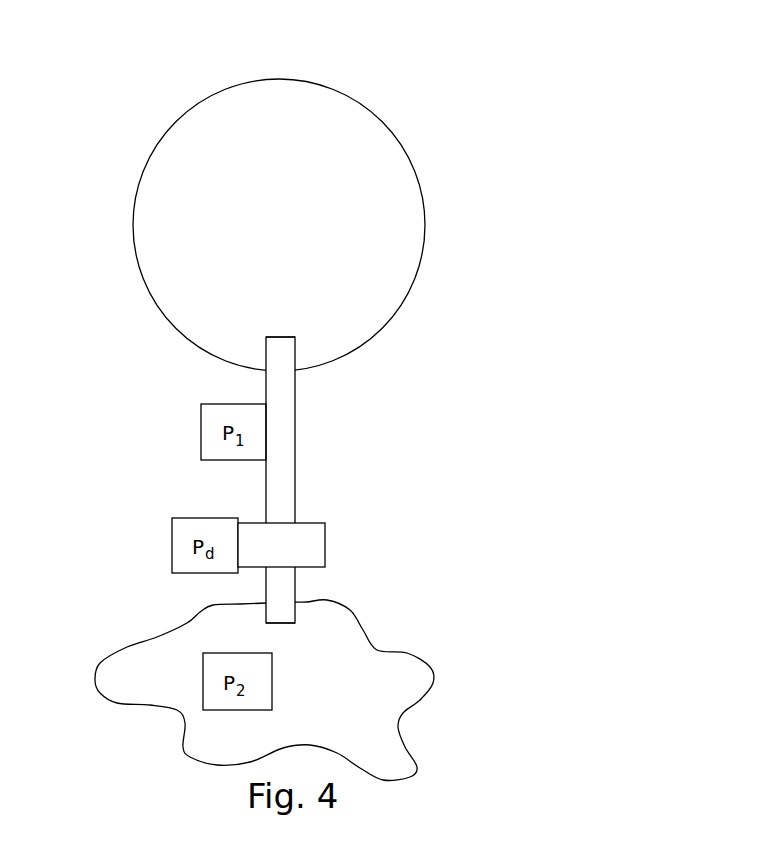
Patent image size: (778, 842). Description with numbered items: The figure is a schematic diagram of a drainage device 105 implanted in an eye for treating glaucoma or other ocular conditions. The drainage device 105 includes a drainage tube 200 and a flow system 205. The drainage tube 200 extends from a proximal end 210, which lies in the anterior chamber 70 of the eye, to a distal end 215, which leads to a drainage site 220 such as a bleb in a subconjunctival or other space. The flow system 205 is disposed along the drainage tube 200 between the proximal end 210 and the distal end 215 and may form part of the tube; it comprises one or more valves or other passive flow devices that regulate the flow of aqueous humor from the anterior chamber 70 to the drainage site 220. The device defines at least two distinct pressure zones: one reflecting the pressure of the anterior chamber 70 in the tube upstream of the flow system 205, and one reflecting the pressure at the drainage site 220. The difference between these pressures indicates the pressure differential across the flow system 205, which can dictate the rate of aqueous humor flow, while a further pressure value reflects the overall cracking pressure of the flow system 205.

The anterior chamber 70 is at (293, 236).
The drainage device 105 is at (352, 470).
The drainage tube 200 is at (295, 387).
The flow system 205 is at (325, 543).
The proximal end 210 is at (283, 336).
The distal end 215 is at (284, 624).
The drainage site 220 is at (97, 687).